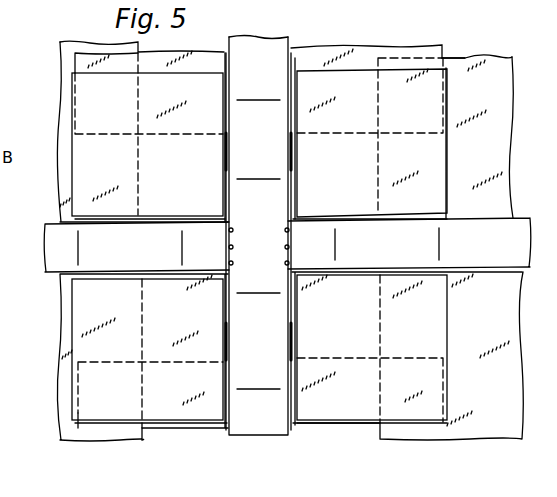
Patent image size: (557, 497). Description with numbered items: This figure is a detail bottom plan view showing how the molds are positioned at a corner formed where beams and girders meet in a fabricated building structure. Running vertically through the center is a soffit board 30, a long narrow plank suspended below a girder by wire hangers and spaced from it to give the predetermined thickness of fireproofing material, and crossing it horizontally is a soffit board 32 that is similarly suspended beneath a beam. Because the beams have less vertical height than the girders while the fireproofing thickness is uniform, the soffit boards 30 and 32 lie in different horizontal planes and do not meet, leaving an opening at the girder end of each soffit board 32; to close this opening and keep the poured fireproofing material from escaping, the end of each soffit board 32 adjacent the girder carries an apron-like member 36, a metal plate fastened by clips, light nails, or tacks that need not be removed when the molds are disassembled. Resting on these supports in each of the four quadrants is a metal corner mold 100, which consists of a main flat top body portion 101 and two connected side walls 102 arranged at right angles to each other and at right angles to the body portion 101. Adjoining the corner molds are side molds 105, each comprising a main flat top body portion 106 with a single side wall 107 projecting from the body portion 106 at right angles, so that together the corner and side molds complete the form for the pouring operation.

The soffit board 30 is at (263, 40).
The soffit board 32 is at (44, 227).
The apron-like member 36 is at (288, 201).
The corner mold 100 is at (100, 150).
The main flat top body portion 101 is at (259, 244).
The side wall 102 is at (191, 193).
The side mold 105 is at (463, 60).
The main flat top body portion 106 is at (452, 58).
The side wall 107 is at (0, 187).